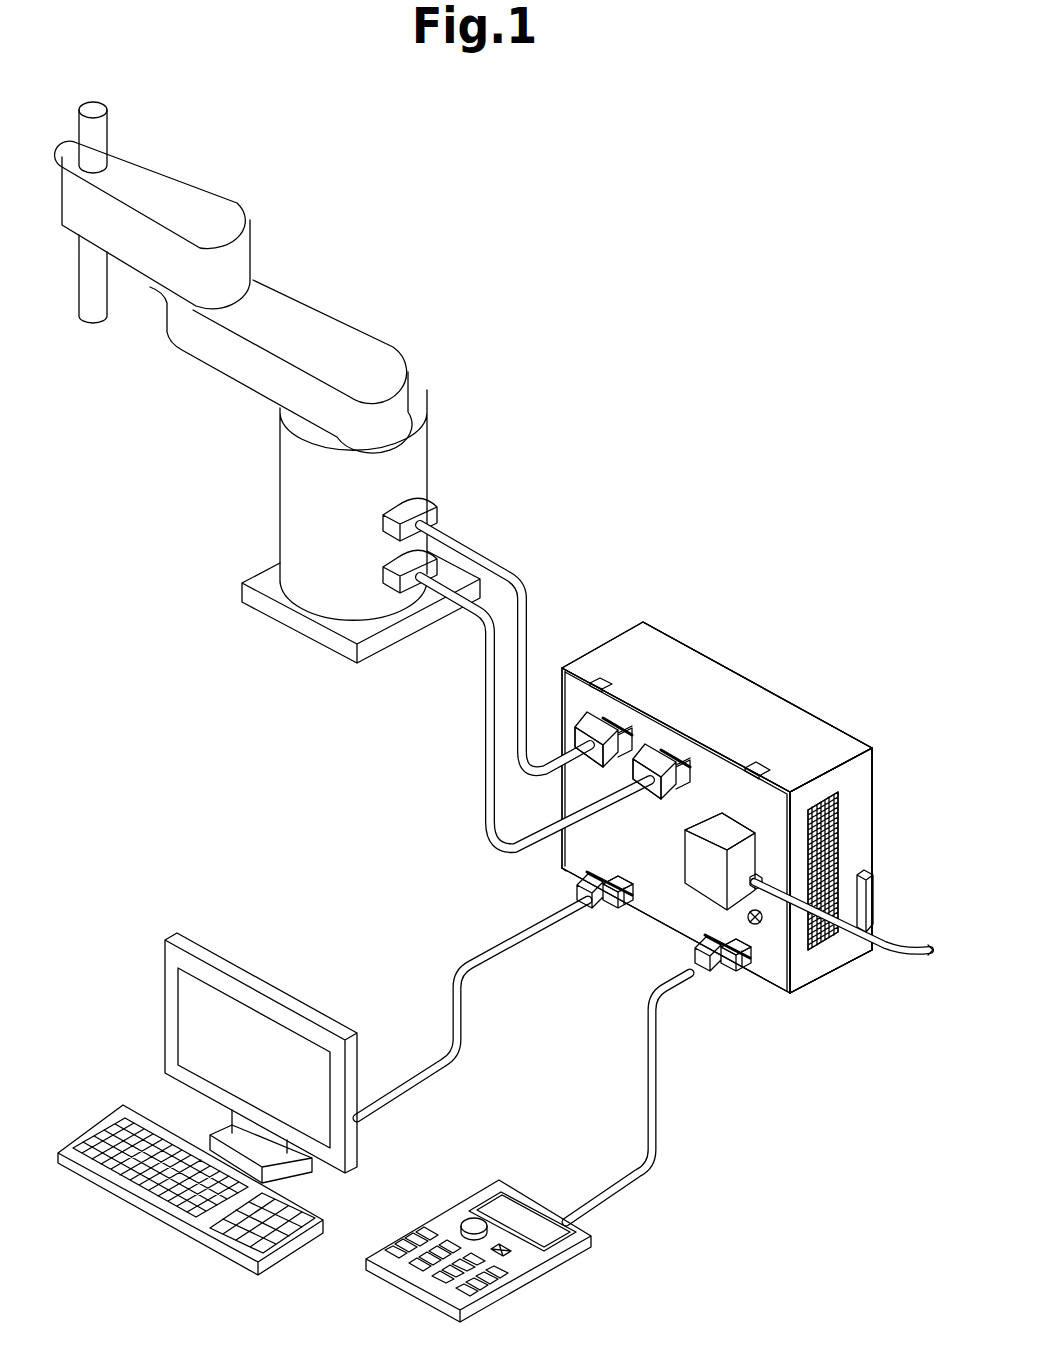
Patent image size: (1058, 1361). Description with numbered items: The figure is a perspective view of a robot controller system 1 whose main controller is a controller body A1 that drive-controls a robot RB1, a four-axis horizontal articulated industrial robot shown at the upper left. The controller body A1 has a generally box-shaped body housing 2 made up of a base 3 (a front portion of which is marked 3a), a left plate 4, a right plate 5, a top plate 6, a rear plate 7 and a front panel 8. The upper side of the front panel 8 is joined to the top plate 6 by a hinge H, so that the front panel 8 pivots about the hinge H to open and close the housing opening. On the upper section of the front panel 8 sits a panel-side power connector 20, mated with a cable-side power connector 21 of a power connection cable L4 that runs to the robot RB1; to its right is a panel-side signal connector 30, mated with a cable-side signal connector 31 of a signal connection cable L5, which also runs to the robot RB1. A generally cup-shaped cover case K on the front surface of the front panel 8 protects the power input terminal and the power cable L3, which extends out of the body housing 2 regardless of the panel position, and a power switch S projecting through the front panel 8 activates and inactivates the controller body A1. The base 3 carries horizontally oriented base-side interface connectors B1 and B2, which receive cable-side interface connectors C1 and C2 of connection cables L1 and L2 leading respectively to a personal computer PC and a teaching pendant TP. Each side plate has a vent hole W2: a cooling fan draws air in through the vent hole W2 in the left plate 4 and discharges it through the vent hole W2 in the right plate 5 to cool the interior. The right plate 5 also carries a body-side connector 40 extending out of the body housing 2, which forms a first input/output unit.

The robot RB1 is at (341, 292).
The robot controller system 1 is at (756, 611).
The controller body A1 is at (831, 870).
The body housing 2 is at (773, 697).
The base 3 is at (562, 853).
The lower case front 3a is at (572, 875).
The left plate 4 is at (578, 660).
The right plate 5 is at (865, 820).
The top plate 6 is at (707, 662).
The rear plate 7 is at (873, 783).
The front panel 8 is at (570, 698).
The hinge H is at (605, 678).
The cover case K is at (723, 820).
The power switch S is at (750, 918).
The panel-side power connector 20 is at (623, 723).
The cable-side power connector 21 is at (590, 760).
The panel-side signal connector 30 is at (668, 757).
The cable-side signal connector 31 is at (647, 790).
The body-side connector 40 is at (872, 893).
The base-side interface connector B1 is at (620, 873).
The base-side interface connector B2 is at (733, 940).
The cable-side interface connector C1 is at (615, 915).
The cable-side interface connector C2 is at (713, 973).
The vent hole W2 is at (827, 937).
The connection cable L1 is at (508, 946).
The connection cable L2 is at (655, 1085).
The power cable L3 is at (880, 950).
The power connection cable L4 is at (537, 780).
The signal connection cable L5 is at (490, 792).
The personal computer PC is at (297, 975).
The teaching pendant TP is at (522, 1168).